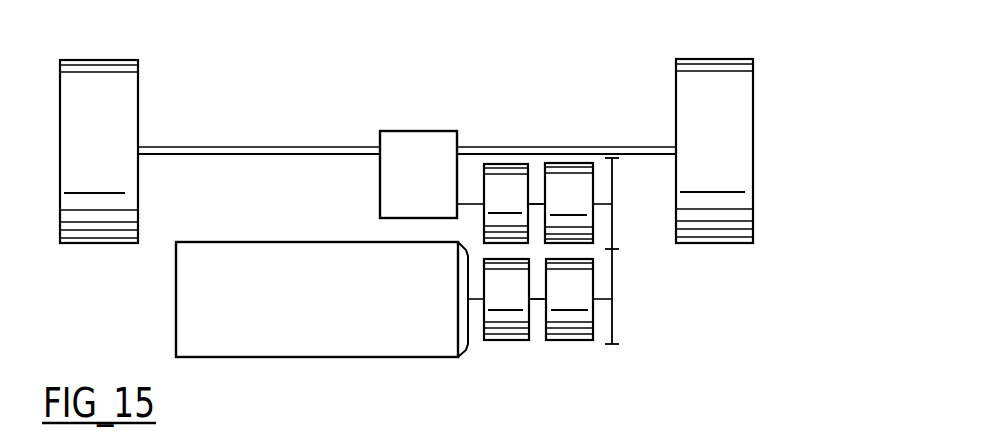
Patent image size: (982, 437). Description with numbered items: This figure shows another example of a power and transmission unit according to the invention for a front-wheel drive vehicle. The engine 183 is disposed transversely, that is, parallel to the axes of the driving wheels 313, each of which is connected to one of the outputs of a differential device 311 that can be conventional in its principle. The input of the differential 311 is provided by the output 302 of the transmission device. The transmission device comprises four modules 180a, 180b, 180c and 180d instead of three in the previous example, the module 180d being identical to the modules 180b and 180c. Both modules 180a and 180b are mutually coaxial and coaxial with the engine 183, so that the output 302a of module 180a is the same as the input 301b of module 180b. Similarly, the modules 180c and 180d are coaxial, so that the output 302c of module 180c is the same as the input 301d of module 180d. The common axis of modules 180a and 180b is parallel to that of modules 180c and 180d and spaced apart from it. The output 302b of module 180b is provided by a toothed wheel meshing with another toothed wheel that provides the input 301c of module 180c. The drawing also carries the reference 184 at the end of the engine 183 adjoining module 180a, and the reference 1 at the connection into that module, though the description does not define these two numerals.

The driving wheels 313 is at (98, 60).
The differential device 311 is at (380, 212).
The output of the transmission device 302 is at (470, 203).
The module 180d is at (497, 172).
The output of module 180c 302c is at (537, 202).
The input of module 180d 301d is at (577, 144).
The module 180c is at (573, 178).
The input of module 180c 301c is at (613, 218).
The output of module 180b 302b is at (613, 278).
The module 180b is at (593, 315).
The module 180a is at (517, 340).
The output of module 180a 302a is at (542, 300).
The input of module 180b 301b is at (588, 341).
The engine 183 is at (327, 358).
The coupling 184 is at (465, 350).
The drive shaft 1 is at (482, 290).